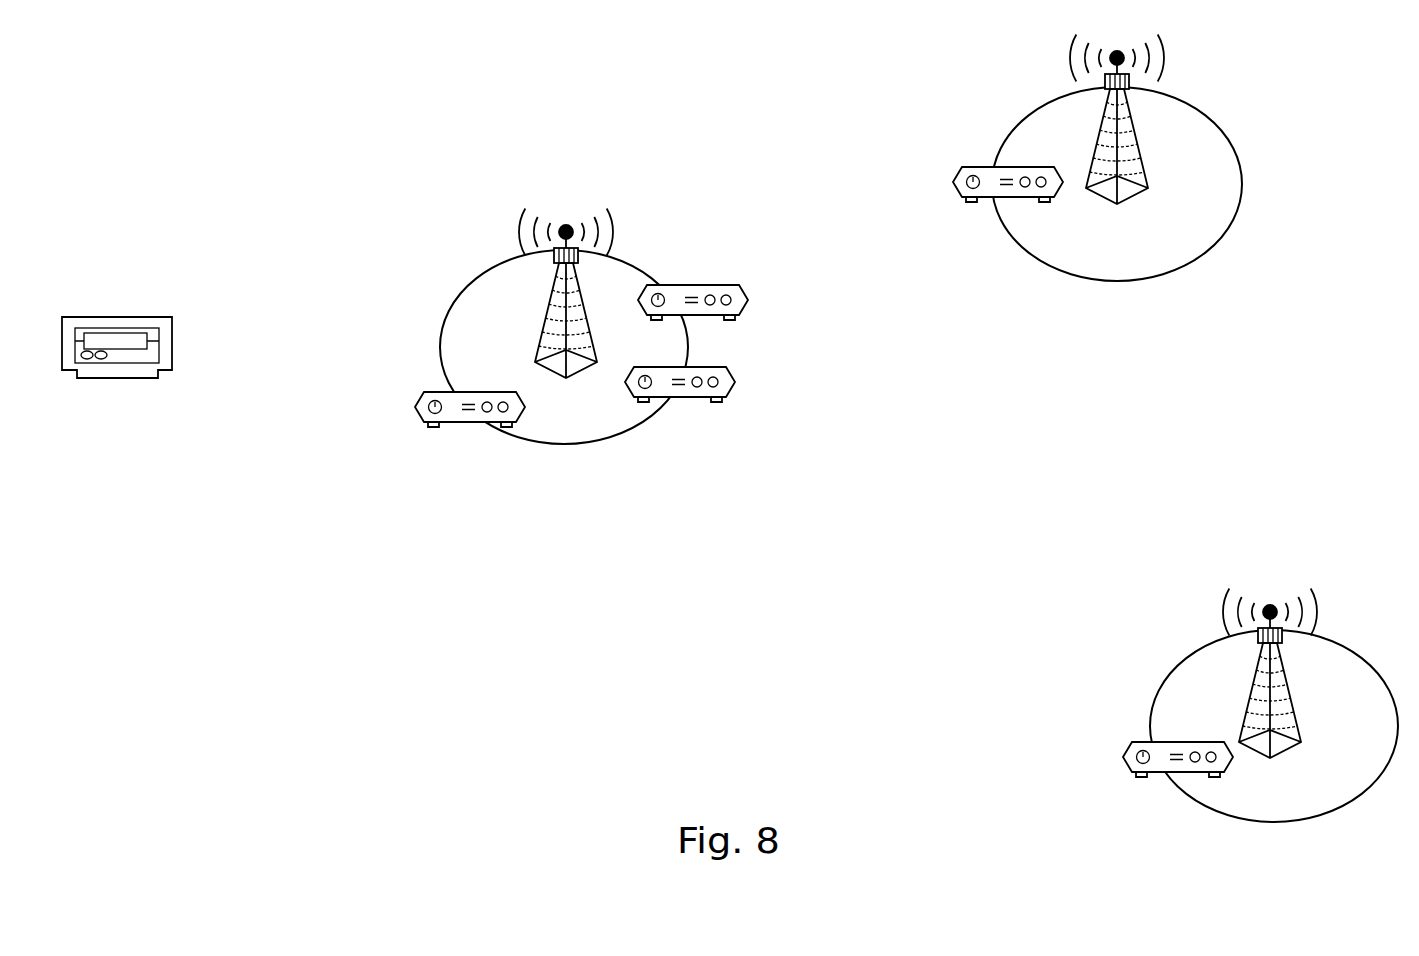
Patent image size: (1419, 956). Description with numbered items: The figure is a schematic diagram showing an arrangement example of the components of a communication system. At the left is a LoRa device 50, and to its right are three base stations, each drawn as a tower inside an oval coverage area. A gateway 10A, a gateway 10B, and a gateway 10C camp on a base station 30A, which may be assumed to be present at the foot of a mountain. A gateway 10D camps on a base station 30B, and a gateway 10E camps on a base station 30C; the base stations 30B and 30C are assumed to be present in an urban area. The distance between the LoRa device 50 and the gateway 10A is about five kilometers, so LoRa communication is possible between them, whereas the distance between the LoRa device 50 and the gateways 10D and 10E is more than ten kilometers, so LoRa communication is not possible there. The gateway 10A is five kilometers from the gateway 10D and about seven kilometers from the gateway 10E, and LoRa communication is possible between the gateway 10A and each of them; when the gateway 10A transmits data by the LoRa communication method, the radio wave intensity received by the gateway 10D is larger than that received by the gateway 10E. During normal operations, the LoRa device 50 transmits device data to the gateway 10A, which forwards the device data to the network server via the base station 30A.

The LoRa device 50 is at (108, 316).
The base station 30A is at (538, 343).
The base station 30B is at (1158, 183).
The base station 30C is at (1228, 688).
The gateway 10A is at (438, 428).
The gateway 10B is at (718, 284).
The gateway 10C is at (708, 403).
The gateway 10D is at (967, 164).
The gateway 10E is at (1148, 740).